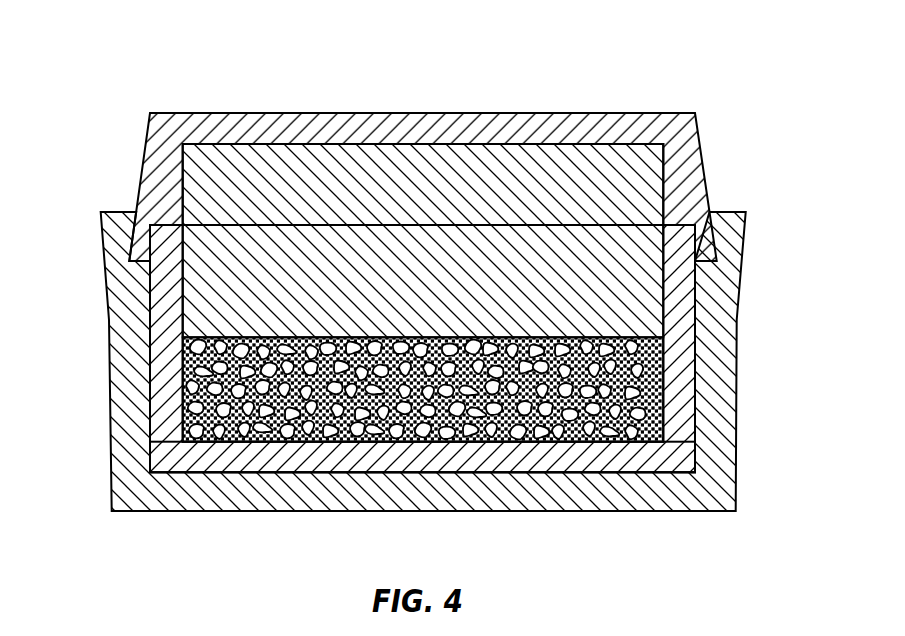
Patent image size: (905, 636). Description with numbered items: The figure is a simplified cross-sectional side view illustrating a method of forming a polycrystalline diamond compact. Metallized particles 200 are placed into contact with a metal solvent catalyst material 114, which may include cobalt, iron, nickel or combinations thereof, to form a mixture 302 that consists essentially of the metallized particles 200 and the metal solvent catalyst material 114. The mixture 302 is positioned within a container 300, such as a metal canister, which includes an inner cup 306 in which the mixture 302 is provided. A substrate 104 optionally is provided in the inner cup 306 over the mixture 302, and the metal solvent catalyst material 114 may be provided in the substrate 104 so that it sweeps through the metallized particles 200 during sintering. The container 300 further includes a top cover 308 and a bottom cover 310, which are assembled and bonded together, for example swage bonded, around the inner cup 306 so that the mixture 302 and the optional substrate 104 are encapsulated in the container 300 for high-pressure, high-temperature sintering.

The container 300 is at (410, 300).
The substrate 104 is at (573, 177).
The top cover 308 is at (162, 172).
The bottom cover 310 is at (123, 333).
The mixture 302 is at (630, 377).
The inner cup 306 is at (310, 458).
The metallized particles 200 is at (498, 452).
The metal solvent catalyst material 114 is at (657, 442).